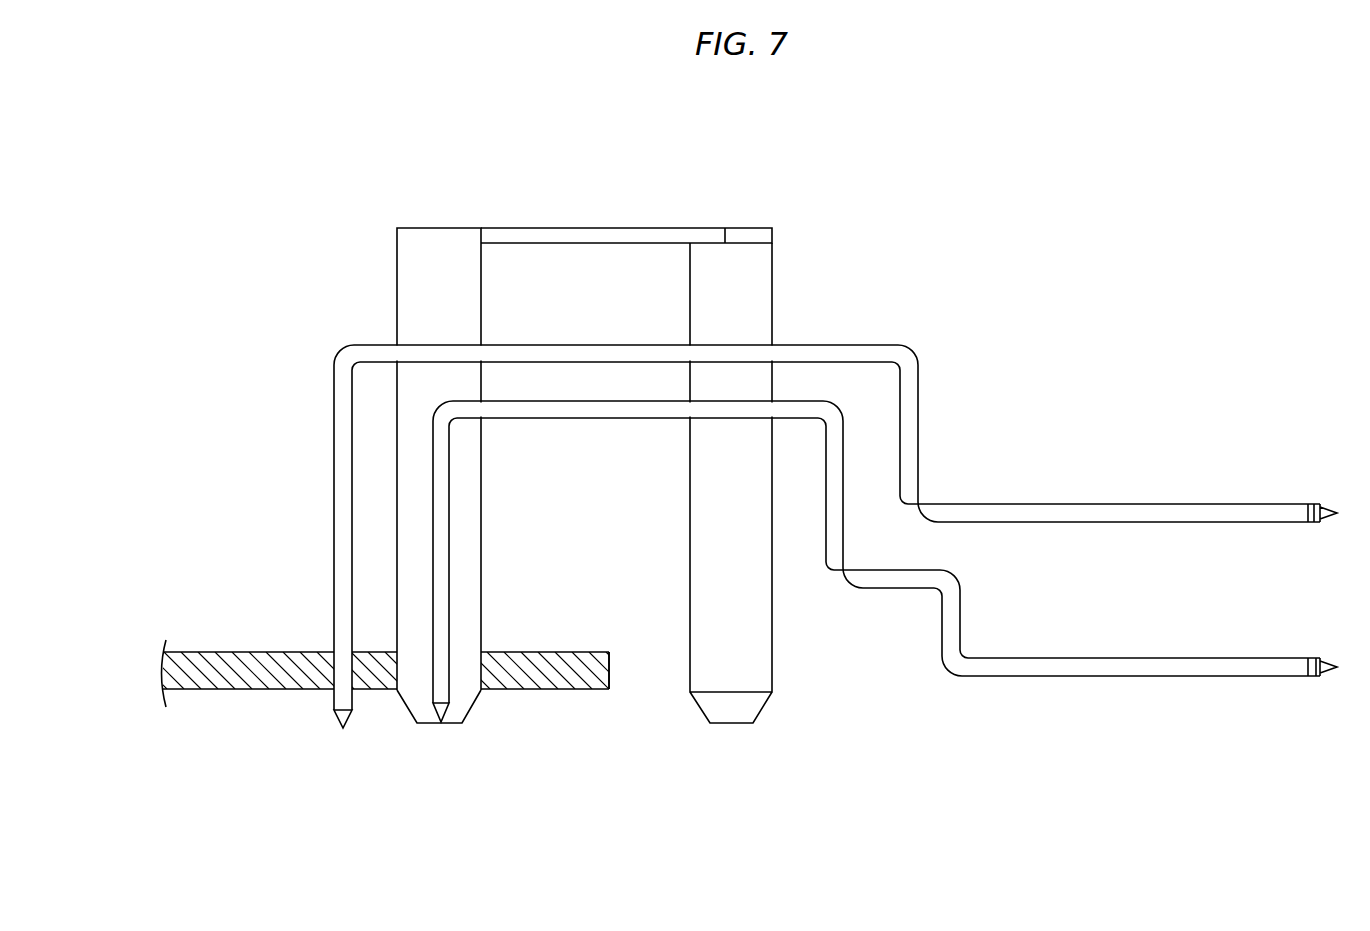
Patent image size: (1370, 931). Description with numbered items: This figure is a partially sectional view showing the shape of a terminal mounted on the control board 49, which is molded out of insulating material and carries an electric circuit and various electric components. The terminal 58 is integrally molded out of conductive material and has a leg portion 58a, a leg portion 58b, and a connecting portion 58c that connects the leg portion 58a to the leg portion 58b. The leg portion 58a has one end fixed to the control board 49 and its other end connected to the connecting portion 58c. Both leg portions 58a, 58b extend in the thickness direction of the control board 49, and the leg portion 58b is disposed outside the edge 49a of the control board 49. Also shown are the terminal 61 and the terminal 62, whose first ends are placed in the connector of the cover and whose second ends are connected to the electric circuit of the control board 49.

The control board 49 is at (217, 683).
The edge of the control board 49a is at (609, 660).
The terminal 58 is at (617, 415).
The leg portion 58a is at (420, 305).
The leg portion 58b is at (750, 307).
The connecting portion 58c is at (658, 238).
The terminal 61 is at (1093, 497).
The terminal 62 is at (1121, 682).